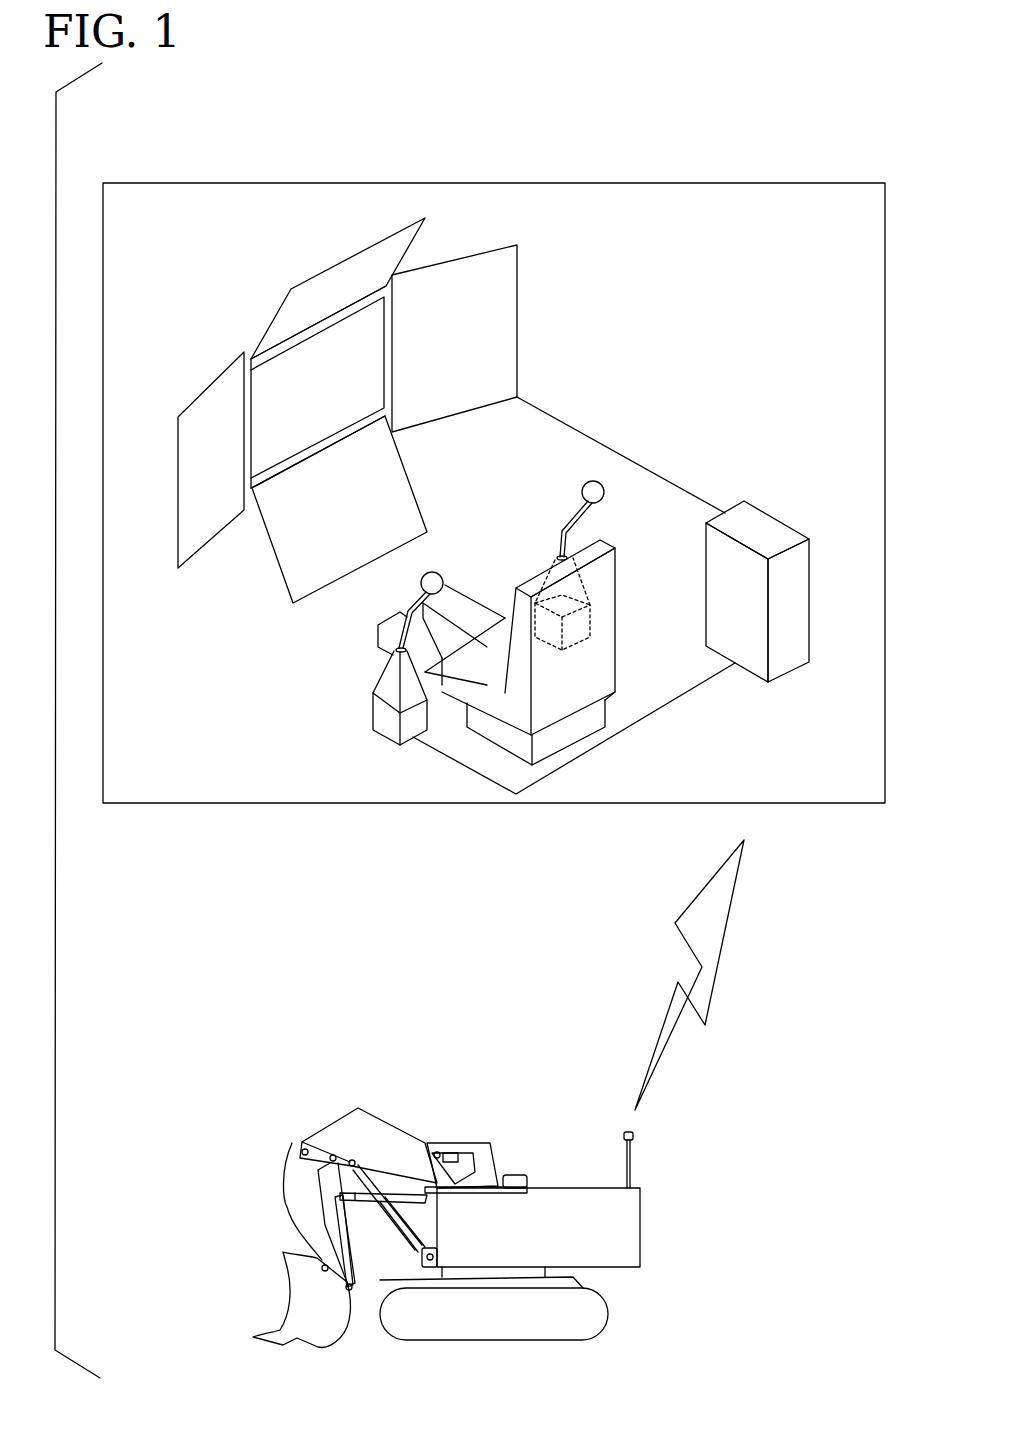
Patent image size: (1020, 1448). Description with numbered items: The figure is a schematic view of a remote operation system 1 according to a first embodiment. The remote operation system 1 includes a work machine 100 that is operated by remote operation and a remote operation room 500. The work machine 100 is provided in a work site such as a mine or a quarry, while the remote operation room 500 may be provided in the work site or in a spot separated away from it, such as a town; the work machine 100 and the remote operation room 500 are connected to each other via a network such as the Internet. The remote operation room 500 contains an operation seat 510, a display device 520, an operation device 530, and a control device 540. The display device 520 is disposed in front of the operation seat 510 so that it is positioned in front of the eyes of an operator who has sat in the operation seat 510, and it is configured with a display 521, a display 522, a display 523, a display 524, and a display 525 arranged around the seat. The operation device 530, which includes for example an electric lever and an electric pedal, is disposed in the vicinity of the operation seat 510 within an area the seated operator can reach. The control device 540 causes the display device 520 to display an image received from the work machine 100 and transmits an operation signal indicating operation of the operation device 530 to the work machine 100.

The remote operation system 1 is at (857, 128).
The work machine 100 is at (565, 1185).
The remote operation room 500 is at (813, 183).
The operation seat 510 is at (517, 587).
The display device 520 is at (205, 262).
The display 521 is at (203, 390).
The display 522 is at (295, 288).
The display 523 is at (352, 393).
The display 524 is at (287, 589).
The display 525 is at (519, 313).
The operation device 530 is at (567, 522).
The control device 540 is at (773, 518).